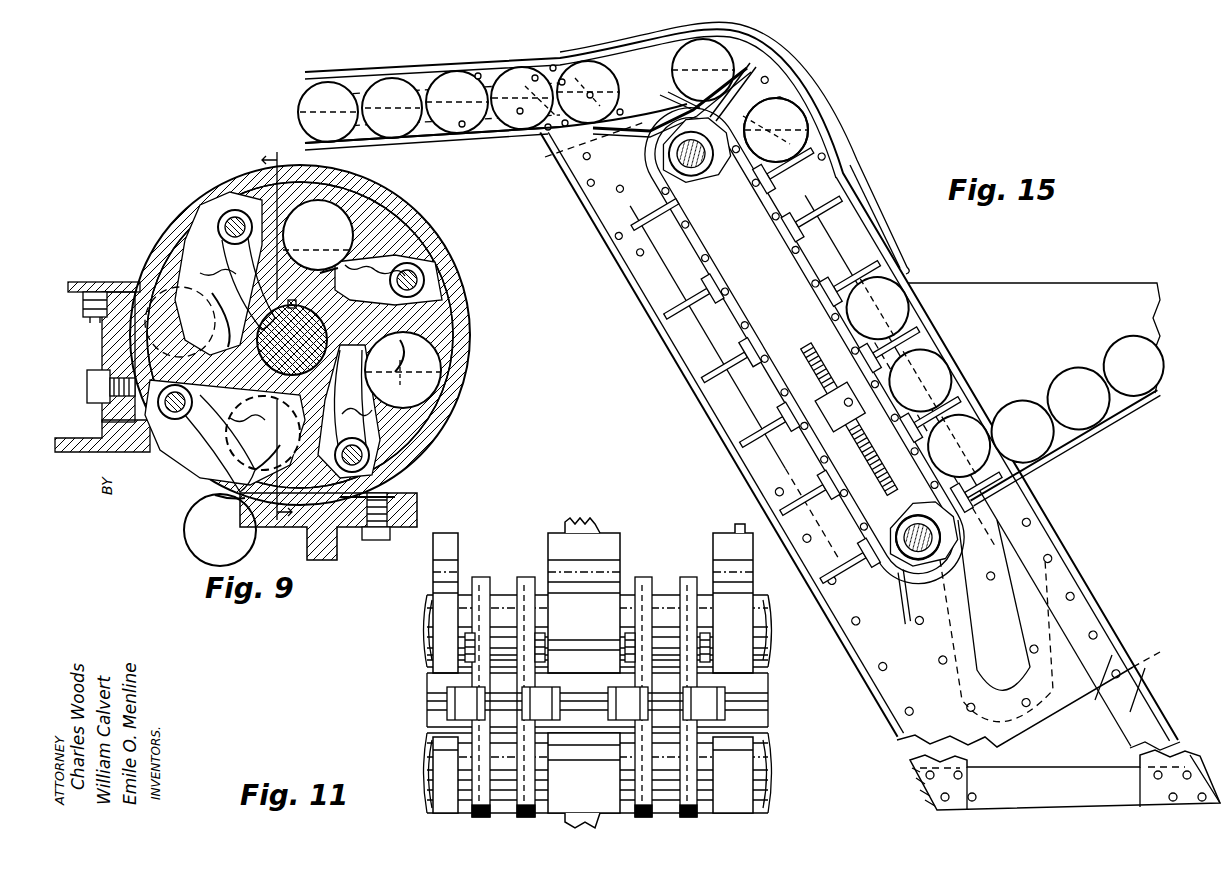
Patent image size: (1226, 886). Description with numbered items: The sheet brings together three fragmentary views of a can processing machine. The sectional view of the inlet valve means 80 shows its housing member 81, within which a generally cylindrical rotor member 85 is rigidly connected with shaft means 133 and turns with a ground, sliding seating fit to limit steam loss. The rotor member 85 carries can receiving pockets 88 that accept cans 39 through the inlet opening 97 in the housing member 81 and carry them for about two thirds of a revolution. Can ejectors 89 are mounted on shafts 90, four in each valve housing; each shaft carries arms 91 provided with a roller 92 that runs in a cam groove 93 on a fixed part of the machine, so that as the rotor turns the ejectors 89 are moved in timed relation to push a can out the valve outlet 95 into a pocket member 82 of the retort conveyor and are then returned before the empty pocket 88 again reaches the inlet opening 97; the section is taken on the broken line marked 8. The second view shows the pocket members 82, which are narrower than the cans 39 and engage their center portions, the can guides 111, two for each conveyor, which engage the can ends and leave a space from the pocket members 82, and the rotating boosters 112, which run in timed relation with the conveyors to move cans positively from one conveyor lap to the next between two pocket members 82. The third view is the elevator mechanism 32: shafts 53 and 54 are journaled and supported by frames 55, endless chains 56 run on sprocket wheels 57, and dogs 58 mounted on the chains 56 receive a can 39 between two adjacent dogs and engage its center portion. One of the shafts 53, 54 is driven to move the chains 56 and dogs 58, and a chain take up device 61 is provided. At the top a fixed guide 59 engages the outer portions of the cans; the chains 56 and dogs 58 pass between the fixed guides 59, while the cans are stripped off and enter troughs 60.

In FIG. 9, the section line 8- 8 is at (272, 328).
In FIG. 15, the elevator mechanism 32 is at (967, 272).
In FIG. 9, the cans 39 is at (330, 222).
In FIG. 15, the cans 39 is at (480, 127).
In FIG. 11, the cans 39 is at (758, 603).
In FIG. 15, the shaft 53 is at (896, 540).
In FIG. 15, the shaft 54 is at (782, 125).
In FIG. 15, the frames 55 is at (1108, 680).
In FIG. 15, the endless chains 56 is at (758, 348).
In FIG. 15, the sprocket wheels 57 is at (708, 185).
In FIG. 15, the dogs 58 is at (861, 272).
In FIG. 15, the fixed guide 59 is at (672, 118).
In FIG. 15, the troughs 60 is at (445, 137).
In FIG. 15, the chain take up device 61 is at (813, 358).
In FIG. 9, the inlet valve means 80 is at (455, 240).
In FIG. 9, the housing member 81 is at (452, 300).
In FIG. 11, the pocket member 82 is at (447, 550).
In FIG. 9, the rotor member 85 is at (148, 357).
In FIG. 9, the can receiving pockets 88 is at (376, 232).
In FIG. 9, the can ejectors 89 is at (330, 372).
In FIG. 9, the shafts 90 is at (225, 212).
In FIG. 9, the arms 91 is at (232, 252).
In FIG. 9, the roller 92 is at (202, 276).
In FIG. 9, the cam groove 93 is at (202, 301).
In FIG. 9, the valve outlet 95 is at (215, 500).
In FIG. 9, the inlet opening 97 is at (150, 233).
In FIG. 11, the can guides 111 is at (505, 565).
In FIG. 11, the rotating boosters 112 is at (627, 633).
In FIG. 9, the shaft means 133 is at (408, 374).